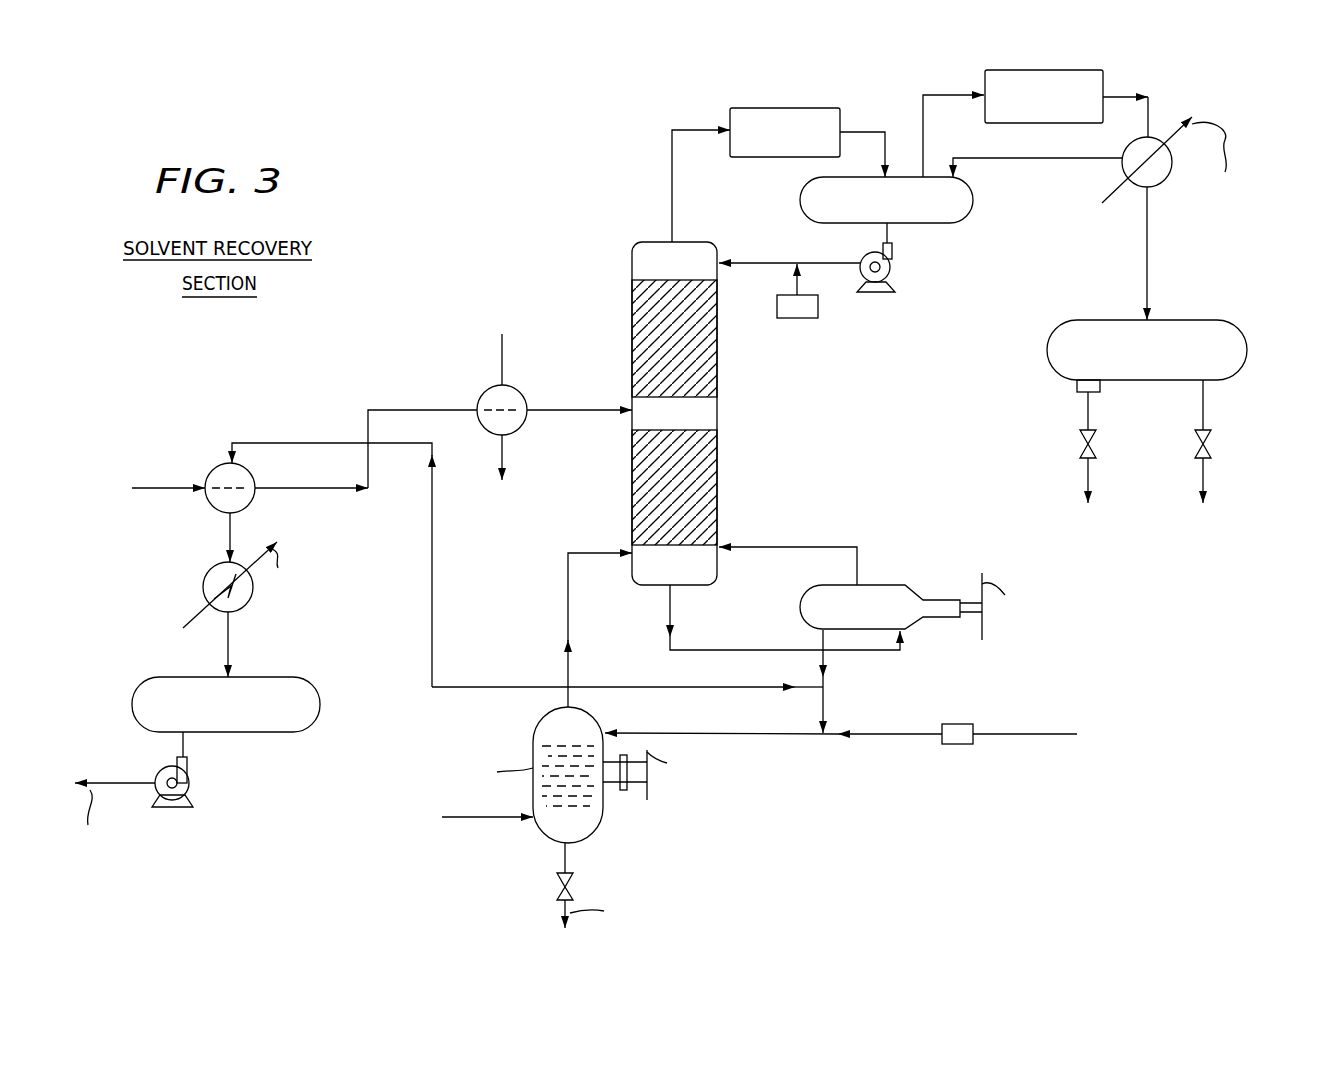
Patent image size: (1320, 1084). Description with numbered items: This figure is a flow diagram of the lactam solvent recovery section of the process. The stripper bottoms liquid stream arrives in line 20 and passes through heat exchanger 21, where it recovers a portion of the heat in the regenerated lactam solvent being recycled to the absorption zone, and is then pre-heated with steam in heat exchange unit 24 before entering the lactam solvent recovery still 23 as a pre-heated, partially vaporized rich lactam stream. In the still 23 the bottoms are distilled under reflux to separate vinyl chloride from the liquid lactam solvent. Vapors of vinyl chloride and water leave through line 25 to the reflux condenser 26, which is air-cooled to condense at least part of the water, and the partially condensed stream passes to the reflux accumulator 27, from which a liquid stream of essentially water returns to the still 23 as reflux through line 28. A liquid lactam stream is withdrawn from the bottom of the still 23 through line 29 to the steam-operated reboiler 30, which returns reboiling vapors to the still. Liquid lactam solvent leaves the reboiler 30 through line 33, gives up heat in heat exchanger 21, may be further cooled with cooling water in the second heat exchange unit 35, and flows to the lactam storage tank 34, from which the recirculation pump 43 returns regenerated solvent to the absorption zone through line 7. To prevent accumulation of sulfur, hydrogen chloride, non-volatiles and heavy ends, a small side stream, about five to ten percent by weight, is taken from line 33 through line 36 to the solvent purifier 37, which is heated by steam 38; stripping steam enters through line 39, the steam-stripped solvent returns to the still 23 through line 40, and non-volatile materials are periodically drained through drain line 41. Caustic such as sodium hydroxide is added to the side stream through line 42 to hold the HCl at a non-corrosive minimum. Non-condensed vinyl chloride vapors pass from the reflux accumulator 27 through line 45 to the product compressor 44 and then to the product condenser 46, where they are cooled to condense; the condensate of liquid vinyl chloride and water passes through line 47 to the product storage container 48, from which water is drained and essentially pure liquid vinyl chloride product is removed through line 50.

The line 7 is at (140, 767).
The line 20 is at (184, 485).
The heat exchanger 21 is at (247, 471).
The lactam solvent recovery still 23 is at (717, 378).
The heat exchange unit 24 is at (520, 395).
The line 25 is at (672, 193).
The reflux condenser 26 is at (730, 150).
The reflux accumulator 27 is at (800, 197).
The line 28 is at (833, 266).
The line 29 is at (669, 603).
The reboiler 30 is at (905, 585).
The line 33 is at (822, 667).
The lactam storage tank 34 is at (290, 677).
The second heat exchange unit 35 is at (238, 562).
The line 36 is at (822, 718).
The solvent purifier 37 is at (984, 627).
The steam 38 is at (647, 798).
The line 39 is at (496, 820).
The line 40 is at (567, 598).
The drain line 41 is at (567, 856).
The line 42 is at (898, 733).
The recirculation pump 43 is at (1070, 164).
The product compressor 44 is at (988, 71).
The line 45 is at (966, 98).
The product condenser 46 is at (1172, 155).
The line 47 is at (1149, 275).
The product storage container 48 is at (1154, 361).
The line 50 is at (1205, 407).